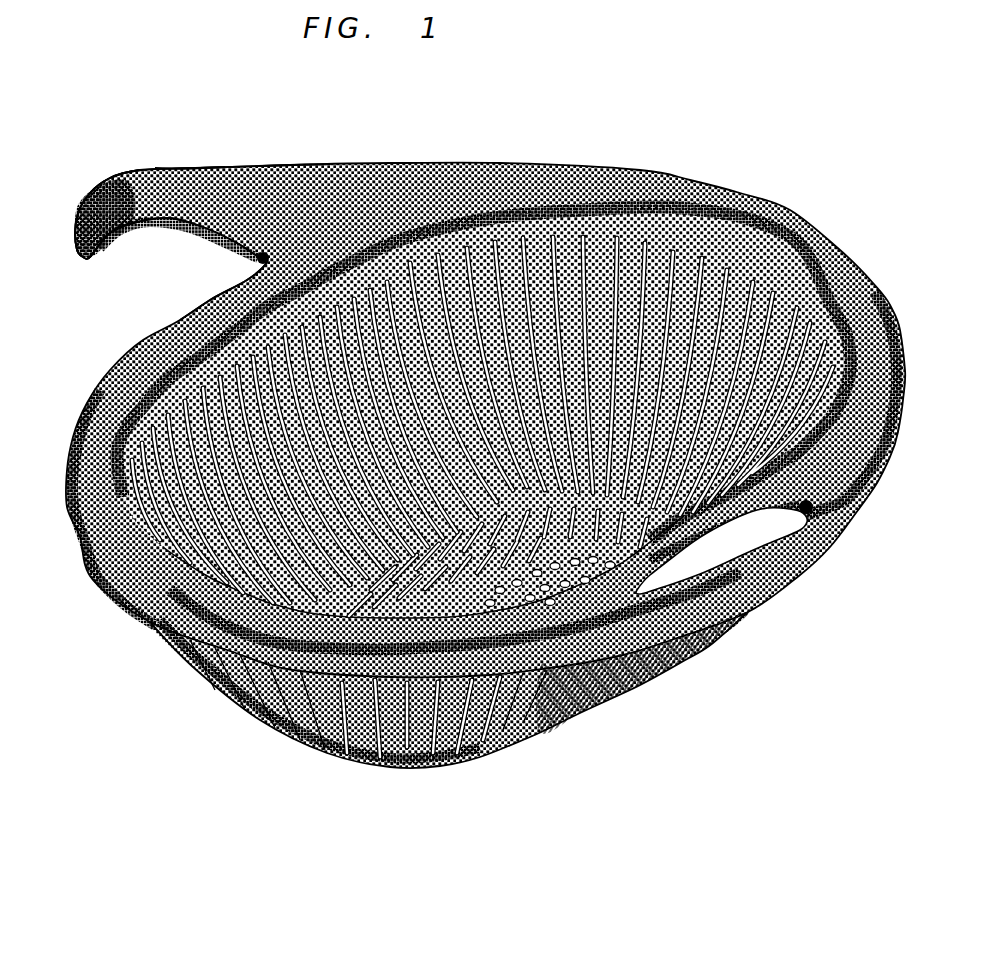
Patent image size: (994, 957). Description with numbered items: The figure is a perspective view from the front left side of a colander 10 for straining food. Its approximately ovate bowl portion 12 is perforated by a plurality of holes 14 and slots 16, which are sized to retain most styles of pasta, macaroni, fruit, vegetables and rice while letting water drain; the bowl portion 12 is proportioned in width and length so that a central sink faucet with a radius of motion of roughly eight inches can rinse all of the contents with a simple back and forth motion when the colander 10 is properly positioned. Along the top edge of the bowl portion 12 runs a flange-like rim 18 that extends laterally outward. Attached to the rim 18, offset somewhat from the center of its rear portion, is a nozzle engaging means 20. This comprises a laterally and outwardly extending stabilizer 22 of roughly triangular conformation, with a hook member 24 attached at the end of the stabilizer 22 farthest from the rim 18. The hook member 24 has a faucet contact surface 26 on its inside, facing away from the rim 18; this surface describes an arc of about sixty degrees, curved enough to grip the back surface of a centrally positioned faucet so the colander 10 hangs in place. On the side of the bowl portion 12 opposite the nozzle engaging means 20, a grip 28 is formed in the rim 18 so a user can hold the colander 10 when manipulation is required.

The colander 10 is at (485, 457).
The bowl portion 12 is at (267, 730).
The holes 14 is at (510, 592).
The slots 16 is at (352, 748).
The rim 18 is at (703, 183).
The nozzle engaging means 20 is at (262, 160).
The stabilizer 22 is at (300, 167).
The hook member 24 is at (193, 170).
The faucet contact surface 26 is at (143, 217).
The grip 28 is at (717, 560).